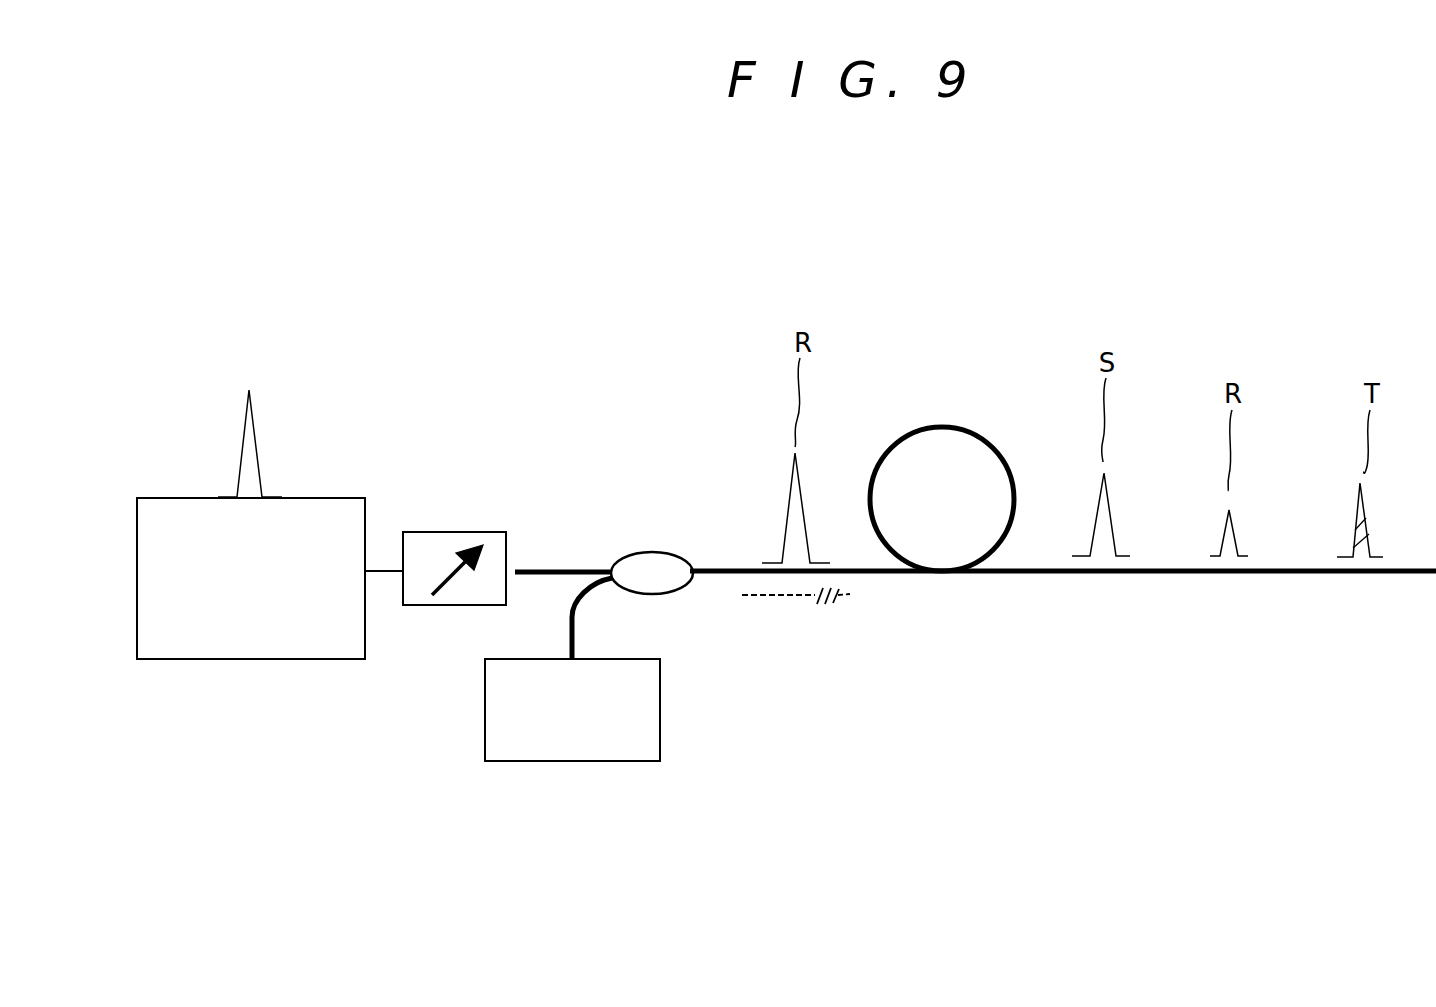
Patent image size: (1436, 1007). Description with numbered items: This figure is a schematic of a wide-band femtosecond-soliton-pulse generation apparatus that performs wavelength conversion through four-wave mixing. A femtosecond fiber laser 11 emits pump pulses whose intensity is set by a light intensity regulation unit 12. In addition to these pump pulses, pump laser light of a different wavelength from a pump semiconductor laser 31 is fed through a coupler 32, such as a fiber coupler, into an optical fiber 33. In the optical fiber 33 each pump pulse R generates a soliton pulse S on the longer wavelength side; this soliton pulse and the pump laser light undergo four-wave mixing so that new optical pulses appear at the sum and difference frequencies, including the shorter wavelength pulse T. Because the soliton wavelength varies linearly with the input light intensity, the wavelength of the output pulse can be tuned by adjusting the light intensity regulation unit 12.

The femtosecond fiber laser 11 is at (247, 660).
The light intensity regulation unit 12 is at (459, 532).
The pump semiconductor laser 31 is at (572, 762).
The coupler 32 is at (655, 553).
The optical fiber 33 is at (1188, 574).